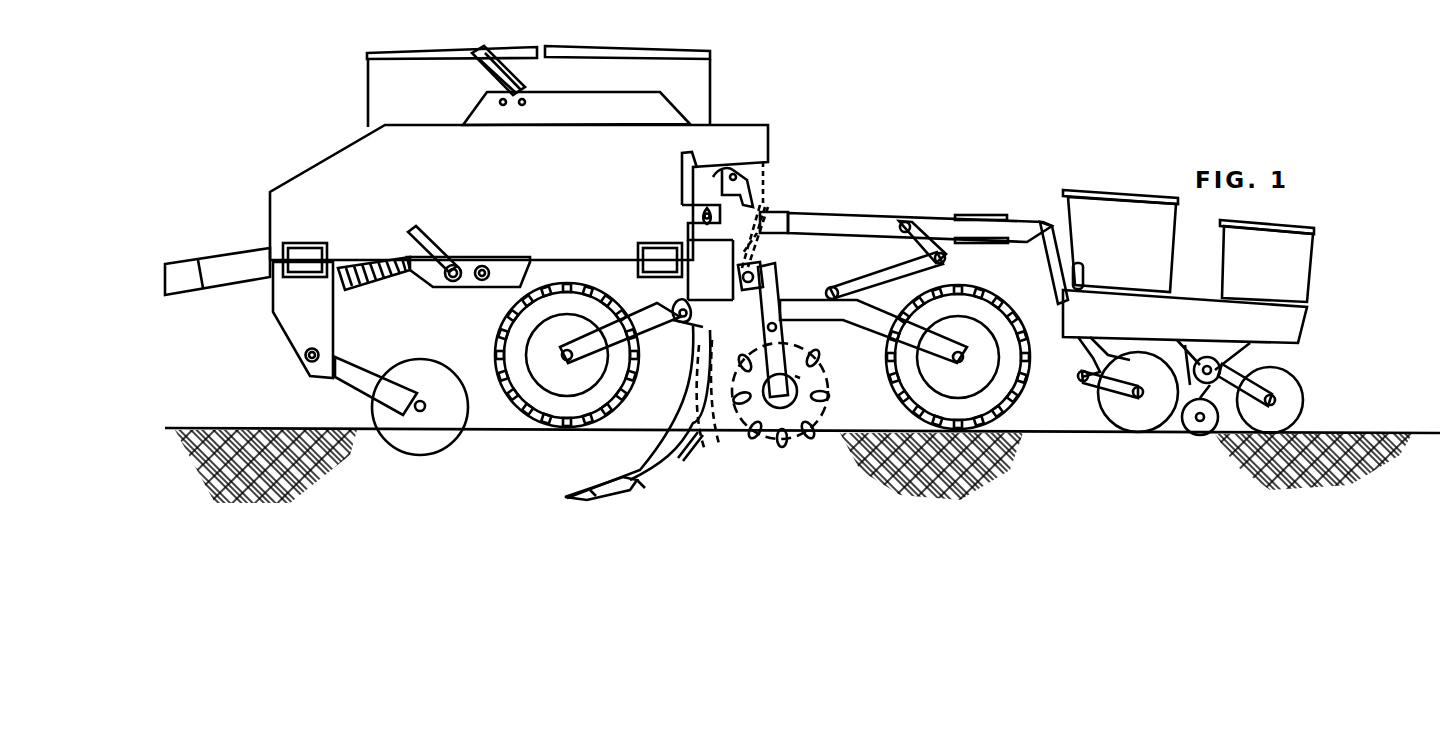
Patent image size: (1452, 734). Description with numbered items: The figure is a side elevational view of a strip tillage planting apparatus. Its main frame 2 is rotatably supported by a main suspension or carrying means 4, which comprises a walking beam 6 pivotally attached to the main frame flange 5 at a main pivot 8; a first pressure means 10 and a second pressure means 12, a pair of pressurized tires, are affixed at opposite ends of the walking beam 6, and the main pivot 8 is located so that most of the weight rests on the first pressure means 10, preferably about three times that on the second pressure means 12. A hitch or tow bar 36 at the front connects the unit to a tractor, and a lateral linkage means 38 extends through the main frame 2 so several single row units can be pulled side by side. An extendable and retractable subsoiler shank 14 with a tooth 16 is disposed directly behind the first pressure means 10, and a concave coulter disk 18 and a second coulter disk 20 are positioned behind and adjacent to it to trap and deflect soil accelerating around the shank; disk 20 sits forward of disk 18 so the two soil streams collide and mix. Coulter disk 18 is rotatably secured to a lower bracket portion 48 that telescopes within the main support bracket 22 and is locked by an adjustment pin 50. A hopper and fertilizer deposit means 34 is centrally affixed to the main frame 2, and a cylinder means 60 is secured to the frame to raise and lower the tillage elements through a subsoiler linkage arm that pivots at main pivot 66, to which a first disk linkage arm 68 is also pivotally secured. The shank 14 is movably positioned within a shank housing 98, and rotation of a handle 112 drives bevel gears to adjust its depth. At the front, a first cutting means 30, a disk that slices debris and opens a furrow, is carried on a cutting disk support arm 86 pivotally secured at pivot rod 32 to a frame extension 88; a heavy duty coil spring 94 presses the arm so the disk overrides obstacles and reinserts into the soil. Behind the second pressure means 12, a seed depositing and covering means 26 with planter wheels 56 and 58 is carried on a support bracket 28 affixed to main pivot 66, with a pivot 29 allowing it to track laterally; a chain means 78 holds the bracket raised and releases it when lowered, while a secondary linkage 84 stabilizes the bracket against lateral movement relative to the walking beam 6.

The main frame 2 is at (328, 175).
The main suspension or carrying means 4 is at (818, 290).
The main frame flange 5 is at (660, 288).
The walking beam 6 is at (860, 313).
The main pivot 8 is at (680, 327).
The first pressure means 10 is at (503, 330).
The second pressure means 12 is at (1017, 397).
The subsoiler shank 14 is at (672, 443).
The tooth 16 is at (625, 495).
The coulter disk 18 is at (838, 400).
The coulter disk 20 is at (715, 412).
The support bracket 22 is at (770, 273).
The seed depositing and covering means 26 is at (1320, 262).
The support bracket 28 is at (847, 217).
The pivot 29 is at (1000, 217).
The first cutting means 30 is at (427, 367).
The pivot rod 32 is at (308, 373).
The hopper and fertilizer deposit means 34 is at (722, 67).
The hitch or tow bar 36 is at (218, 267).
The lateral linkage means 38 is at (298, 245).
The lower bracket portion 48 is at (780, 377).
The adjustment pin 50 is at (775, 287).
The planter wheel 56 is at (1140, 423).
The planter wheel 58 is at (1297, 392).
The cylinder means 60 is at (500, 70).
The main pivot 66 is at (487, 263).
The first disk linkage arm 68 is at (700, 233).
The chain means 78 is at (767, 183).
The secondary linkage 84 is at (960, 257).
The cutting disk support arm 86 is at (353, 367).
The frame extension 88 is at (316, 313).
The heavy duty coil spring 94 is at (373, 283).
The shank housing 98 is at (728, 281).
The handle 112 is at (422, 233).